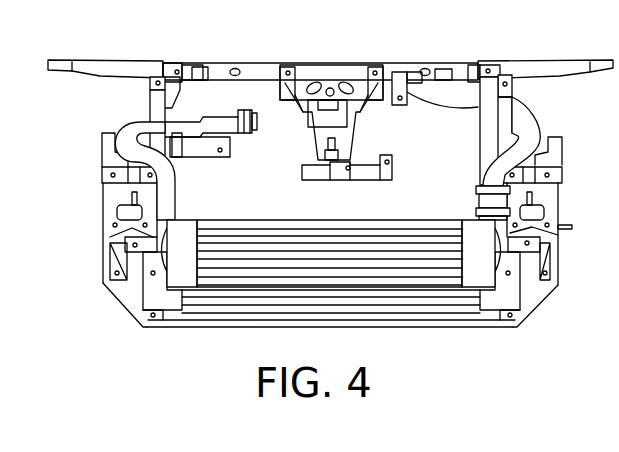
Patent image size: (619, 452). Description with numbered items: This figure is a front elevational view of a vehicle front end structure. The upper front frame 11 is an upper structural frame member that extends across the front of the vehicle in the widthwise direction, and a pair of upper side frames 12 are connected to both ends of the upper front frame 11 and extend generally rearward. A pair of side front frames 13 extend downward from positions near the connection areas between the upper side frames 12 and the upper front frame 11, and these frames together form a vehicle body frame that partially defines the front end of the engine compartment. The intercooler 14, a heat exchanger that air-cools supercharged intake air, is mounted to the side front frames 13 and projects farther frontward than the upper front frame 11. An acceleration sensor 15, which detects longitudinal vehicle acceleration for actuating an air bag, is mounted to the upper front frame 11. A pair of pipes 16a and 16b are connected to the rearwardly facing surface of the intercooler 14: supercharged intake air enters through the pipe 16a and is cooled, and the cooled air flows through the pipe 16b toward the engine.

The upper front frame 11 is at (217, 70).
The upper side frames 12 is at (115, 65).
The side front frames 13 is at (152, 111).
The intercooler 14 is at (279, 243).
The acceleration sensor 15 is at (413, 77).
The pipe 16a is at (168, 191).
The pipe 16b is at (528, 115).